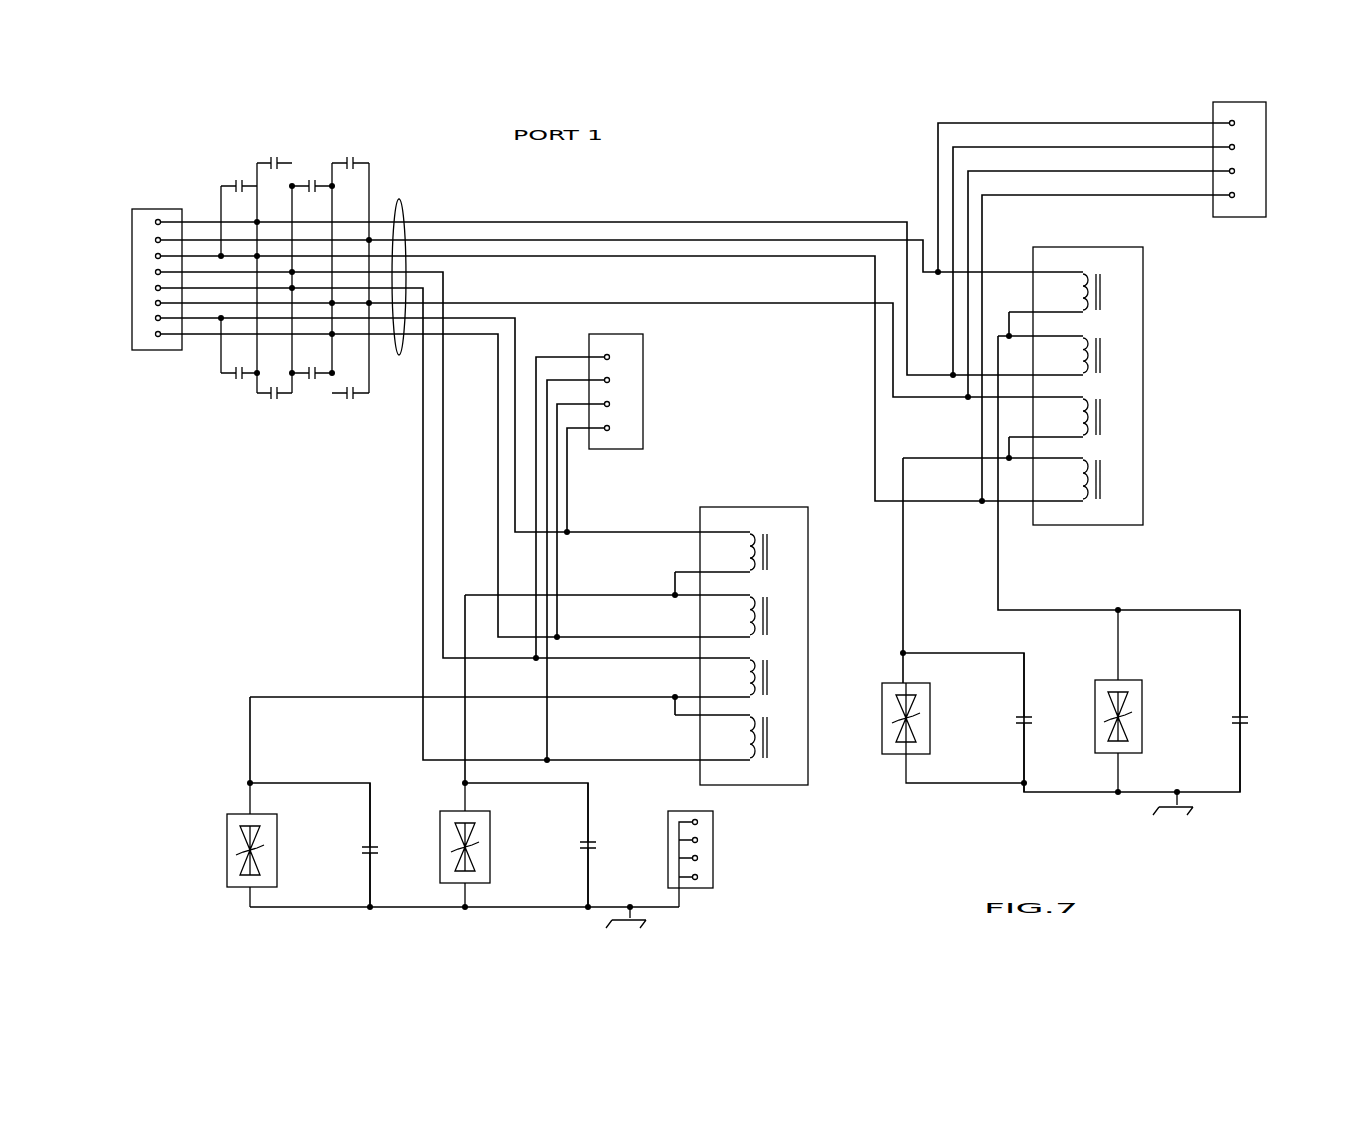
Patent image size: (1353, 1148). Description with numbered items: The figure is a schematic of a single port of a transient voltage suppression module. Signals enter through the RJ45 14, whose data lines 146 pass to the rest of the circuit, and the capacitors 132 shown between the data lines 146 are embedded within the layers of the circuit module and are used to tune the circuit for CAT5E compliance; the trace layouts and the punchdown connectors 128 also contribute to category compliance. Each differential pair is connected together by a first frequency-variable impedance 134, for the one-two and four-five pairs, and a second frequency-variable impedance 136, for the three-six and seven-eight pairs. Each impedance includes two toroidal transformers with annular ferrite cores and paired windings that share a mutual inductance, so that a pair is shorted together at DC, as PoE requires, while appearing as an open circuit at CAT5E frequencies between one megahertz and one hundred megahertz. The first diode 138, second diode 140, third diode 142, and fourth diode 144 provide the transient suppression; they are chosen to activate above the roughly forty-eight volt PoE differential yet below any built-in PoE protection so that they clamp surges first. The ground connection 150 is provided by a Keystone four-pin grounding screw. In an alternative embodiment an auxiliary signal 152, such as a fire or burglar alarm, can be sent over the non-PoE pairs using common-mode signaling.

The RJ45 14 is at (132, 288).
The capacitors 132 is at (400, 425).
The data lines 146 is at (400, 199).
The 110 punchdown connectors 128 is at (643, 392).
The first frequency-variable impedance 134 is at (808, 645).
The second frequency-variable impedance 136 is at (1143, 385).
The first diode 138 is at (227, 835).
The second diode 140 is at (490, 828).
The third diode 142 is at (930, 718).
The fourth diode 144 is at (1142, 718).
The ground connection 150 is at (713, 830).
The auxiliary signal 152 is at (250, 697).